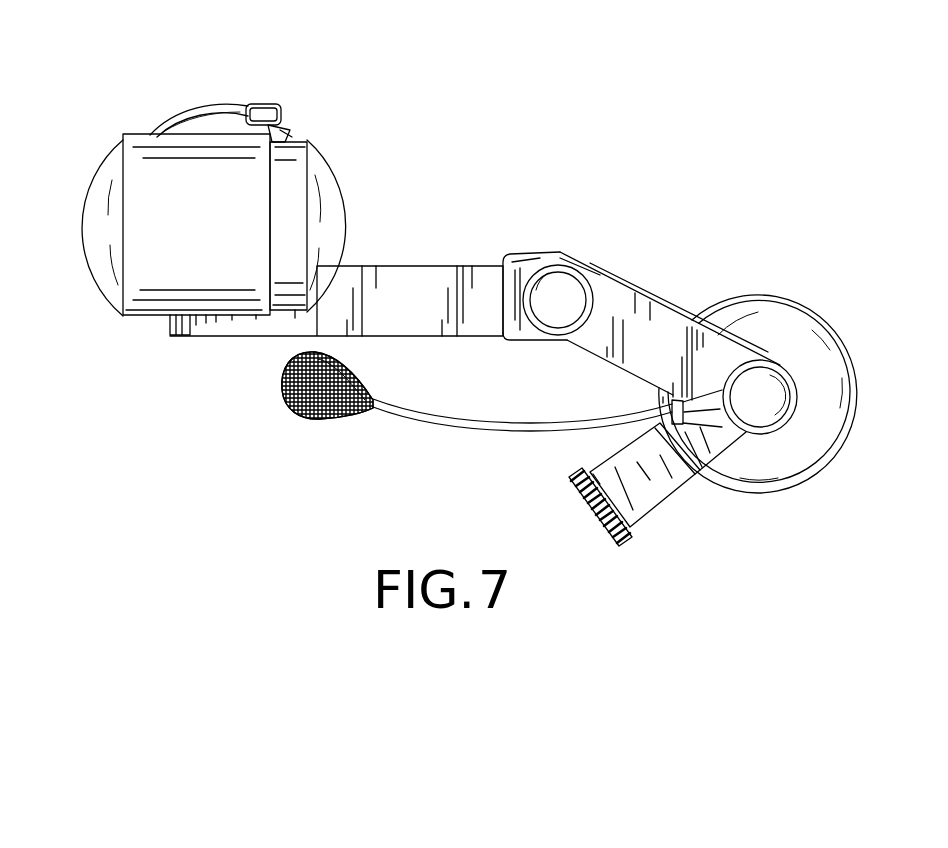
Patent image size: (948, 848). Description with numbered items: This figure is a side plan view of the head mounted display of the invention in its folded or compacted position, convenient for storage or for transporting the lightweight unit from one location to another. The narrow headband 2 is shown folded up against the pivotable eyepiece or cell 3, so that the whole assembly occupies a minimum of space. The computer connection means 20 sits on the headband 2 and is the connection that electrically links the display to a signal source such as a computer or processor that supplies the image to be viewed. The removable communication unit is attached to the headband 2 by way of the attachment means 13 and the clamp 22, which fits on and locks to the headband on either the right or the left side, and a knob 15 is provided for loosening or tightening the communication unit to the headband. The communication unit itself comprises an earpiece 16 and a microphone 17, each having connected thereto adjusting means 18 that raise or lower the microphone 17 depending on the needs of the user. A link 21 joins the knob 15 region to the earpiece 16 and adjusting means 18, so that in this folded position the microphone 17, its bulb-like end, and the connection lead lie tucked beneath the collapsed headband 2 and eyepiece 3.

The headband 2 is at (420, 265).
The eyepiece 3 is at (183, 282).
The attachment means 13 is at (668, 477).
The knob 15 is at (574, 290).
The earpiece 16 is at (803, 320).
The microphone 17 is at (315, 413).
The adjusting means 18 is at (770, 406).
The computer connection means 20 is at (207, 115).
The link 21 is at (663, 310).
The clamp 22 is at (628, 548).